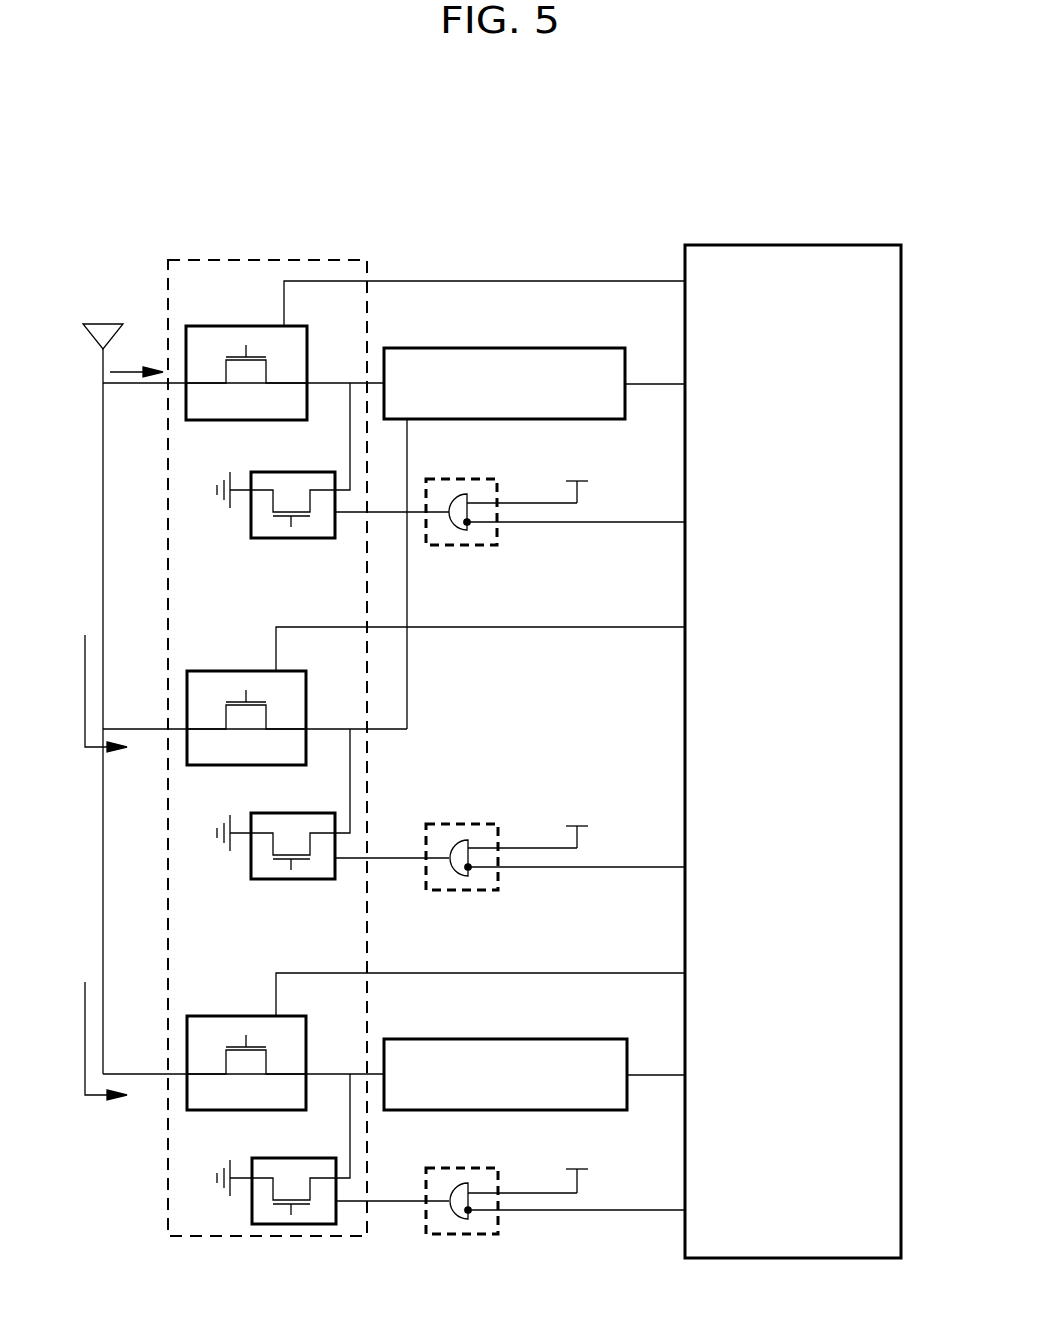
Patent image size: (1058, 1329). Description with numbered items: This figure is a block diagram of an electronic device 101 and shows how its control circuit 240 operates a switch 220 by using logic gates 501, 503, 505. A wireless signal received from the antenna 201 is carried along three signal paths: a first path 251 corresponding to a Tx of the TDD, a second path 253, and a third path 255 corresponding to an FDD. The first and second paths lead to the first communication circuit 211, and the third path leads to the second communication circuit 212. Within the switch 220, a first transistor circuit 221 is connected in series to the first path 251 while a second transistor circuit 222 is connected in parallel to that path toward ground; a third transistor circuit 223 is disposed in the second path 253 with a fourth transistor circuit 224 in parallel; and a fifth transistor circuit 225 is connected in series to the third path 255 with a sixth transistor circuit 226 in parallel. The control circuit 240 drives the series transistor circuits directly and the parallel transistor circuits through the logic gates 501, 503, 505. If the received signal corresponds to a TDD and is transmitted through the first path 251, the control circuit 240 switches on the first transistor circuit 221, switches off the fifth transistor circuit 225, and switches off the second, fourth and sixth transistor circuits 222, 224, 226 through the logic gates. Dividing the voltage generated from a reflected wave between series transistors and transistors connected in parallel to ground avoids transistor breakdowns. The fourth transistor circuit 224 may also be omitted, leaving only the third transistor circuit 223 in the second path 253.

The electronic device 101 is at (130, 173).
The antenna 201 is at (98, 323).
The first path 251 is at (140, 385).
The second path 253 is at (83, 690).
The third path 255 is at (83, 1038).
The switch 220 is at (230, 259).
The first transistor circuit 221 is at (244, 325).
The second transistor circuit 222 is at (275, 538).
The third transistor circuit 223 is at (247, 670).
The fourth transistor circuit 224 is at (275, 880).
The fifth transistor circuit 225 is at (247, 1016).
The sixth transistor circuit 226 is at (272, 1226).
The first communication circuit 211 is at (556, 349).
The second communication circuit 212 is at (556, 1040).
The control circuit 240 is at (861, 246).
The logic gate 501 is at (460, 546).
The logic gate 503 is at (463, 891).
The logic gate 505 is at (463, 1236).